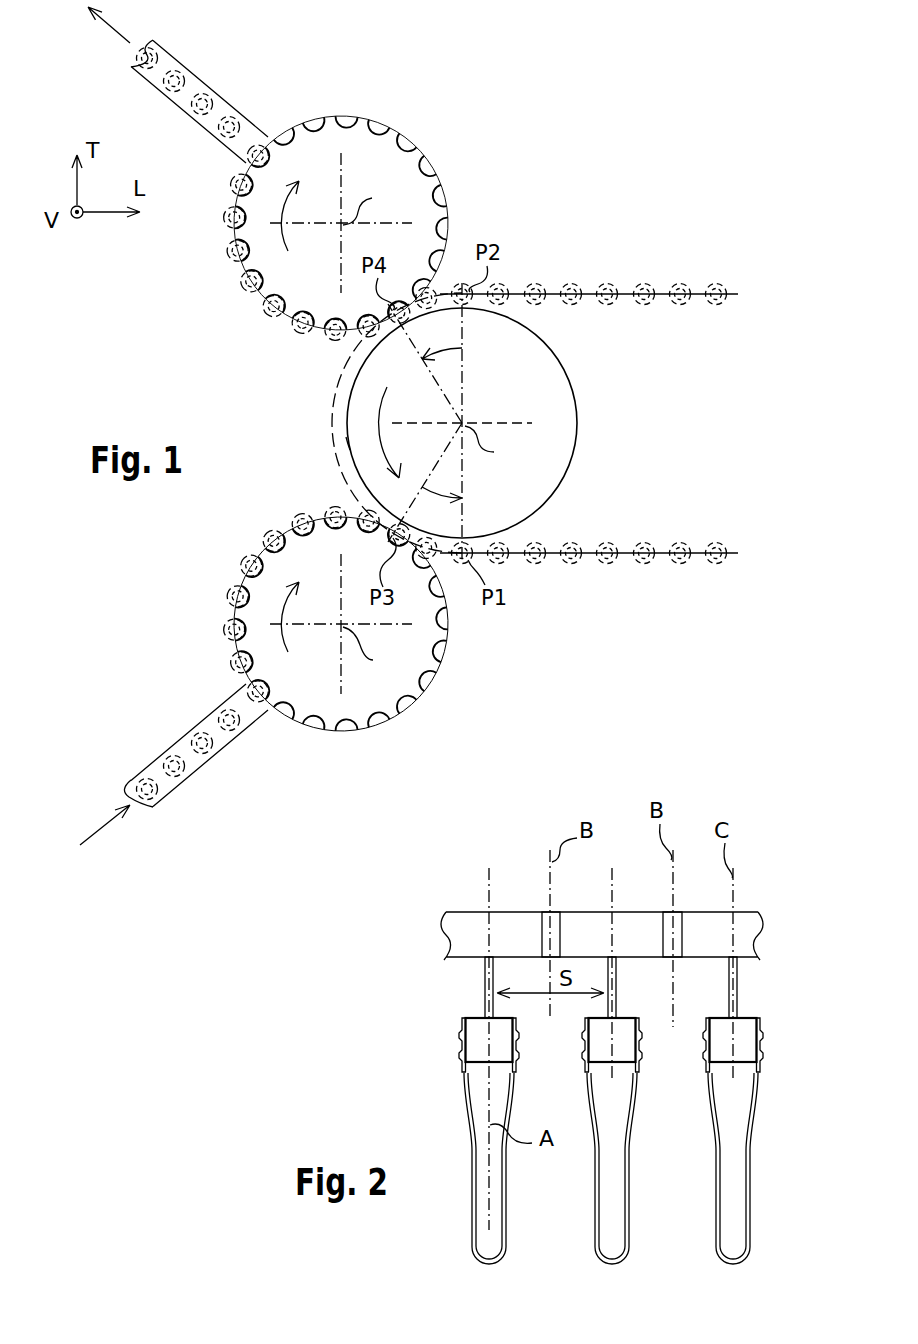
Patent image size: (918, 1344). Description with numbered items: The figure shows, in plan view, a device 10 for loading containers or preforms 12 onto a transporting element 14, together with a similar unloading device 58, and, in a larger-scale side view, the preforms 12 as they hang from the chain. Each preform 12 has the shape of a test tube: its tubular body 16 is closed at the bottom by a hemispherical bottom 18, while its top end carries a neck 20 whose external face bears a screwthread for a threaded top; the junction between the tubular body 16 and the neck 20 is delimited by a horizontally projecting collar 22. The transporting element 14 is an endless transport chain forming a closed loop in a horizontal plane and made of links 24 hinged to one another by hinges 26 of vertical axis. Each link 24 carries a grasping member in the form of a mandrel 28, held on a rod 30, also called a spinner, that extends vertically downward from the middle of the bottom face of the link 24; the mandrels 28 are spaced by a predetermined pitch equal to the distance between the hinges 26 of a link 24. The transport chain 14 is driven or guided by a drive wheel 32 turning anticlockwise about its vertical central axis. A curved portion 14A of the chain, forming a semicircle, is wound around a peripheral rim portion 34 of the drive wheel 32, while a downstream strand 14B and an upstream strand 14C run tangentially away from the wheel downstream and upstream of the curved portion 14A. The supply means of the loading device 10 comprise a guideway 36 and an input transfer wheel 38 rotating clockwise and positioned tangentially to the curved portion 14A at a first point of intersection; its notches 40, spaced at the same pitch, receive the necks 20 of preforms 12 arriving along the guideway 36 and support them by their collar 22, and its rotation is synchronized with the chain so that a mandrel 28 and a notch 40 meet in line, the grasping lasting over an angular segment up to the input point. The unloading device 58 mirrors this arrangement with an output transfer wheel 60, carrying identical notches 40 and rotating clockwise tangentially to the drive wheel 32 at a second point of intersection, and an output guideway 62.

In FIG. 1, the loading device 10 is at (192, 383).
In FIG. 1, the preform 12 is at (213, 102).
In FIG. 2, the preform 12 is at (457, 1157).
In FIG. 1, the transport chain 14 is at (497, 389).
In FIG. 2, the transport chain 14 is at (466, 898).
In FIG. 1, the curved portion 14A is at (332, 398).
In FIG. 1, the downstream strand 14B is at (663, 552).
In FIG. 1, the upstream strand 14C is at (662, 293).
In FIG. 2, the tubular body 16 is at (470, 1205).
In FIG. 2, the hemispherical bottom 18 is at (487, 1270).
In FIG. 2, the neck 20 is at (459, 1045).
In FIG. 2, the collar 22 is at (462, 1083).
In FIG. 2, the link 24 is at (508, 928).
In FIG. 2, the hinge 26 is at (557, 935).
In FIG. 2, the mandrel 28 is at (497, 1040).
In FIG. 2, the rod 30 is at (485, 972).
In FIG. 1, the drive wheel 32 is at (530, 387).
In FIG. 1, the peripheral rim portion 34 is at (346, 437).
In FIG. 1, the guideway 36 is at (180, 738).
In FIG. 1, the input transfer wheel 38 is at (372, 697).
In FIG. 1, the notch 40 is at (433, 673).
In FIG. 1, the unloading device 58 is at (516, 166).
In FIG. 1, the output transfer wheel 60 is at (363, 162).
In FIG. 1, the output guideway 62 is at (237, 110).